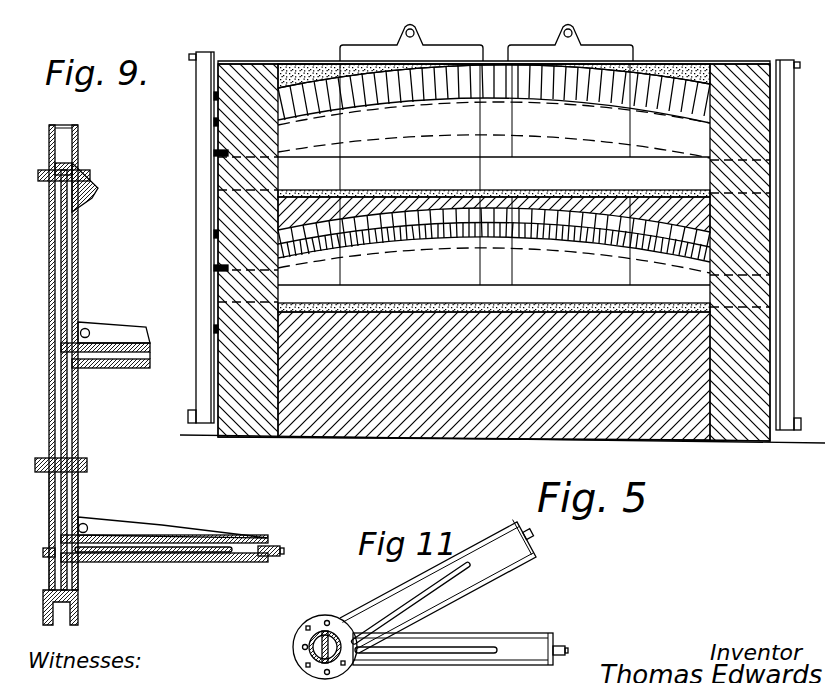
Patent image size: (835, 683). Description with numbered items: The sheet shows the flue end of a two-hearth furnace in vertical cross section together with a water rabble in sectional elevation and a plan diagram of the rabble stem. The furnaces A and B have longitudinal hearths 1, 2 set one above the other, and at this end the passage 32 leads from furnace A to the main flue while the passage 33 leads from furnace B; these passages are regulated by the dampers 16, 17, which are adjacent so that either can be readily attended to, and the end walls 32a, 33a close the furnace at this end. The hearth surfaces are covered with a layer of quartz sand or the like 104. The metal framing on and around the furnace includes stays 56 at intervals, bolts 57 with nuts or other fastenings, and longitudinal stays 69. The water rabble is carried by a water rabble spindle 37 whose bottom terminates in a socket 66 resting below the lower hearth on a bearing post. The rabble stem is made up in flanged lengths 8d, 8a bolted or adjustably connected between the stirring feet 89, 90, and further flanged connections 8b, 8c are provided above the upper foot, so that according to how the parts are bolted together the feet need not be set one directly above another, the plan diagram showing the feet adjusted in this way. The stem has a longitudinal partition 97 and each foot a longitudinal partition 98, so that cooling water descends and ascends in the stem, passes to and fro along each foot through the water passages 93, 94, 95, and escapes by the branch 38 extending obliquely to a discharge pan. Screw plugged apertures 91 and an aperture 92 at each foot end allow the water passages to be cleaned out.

In FIG. 5, the stays 56 is at (211, 42).
In FIG. 5, the bolts 57 is at (270, 56).
In FIG. 5, the damper 16 is at (472, 43).
In FIG. 5, the damper 17 is at (630, 45).
In FIG. 5, the longitudinal stays 69 is at (214, 92).
In FIG. 5, the layer of quartz sand 104 is at (395, 192).
In FIG. 5, the passage 33 is at (494, 107).
In FIG. 5, the end wall 33a is at (494, 143).
In FIG. 5, the hearth 2 is at (442, 192).
In FIG. 5, the furnace B is at (532, 173).
In FIG. 5, the passage 32 is at (494, 241).
In FIG. 5, the end wall 32a is at (494, 277).
In FIG. 5, the hearth 1 is at (443, 303).
In FIG. 5, the furnace A is at (533, 271).
In FIG. 9, the flanged length of rabble stem 8d is at (80, 267).
In FIG. 11, the flanged length of rabble stem 8d is at (305, 637).
In FIG. 9, the water rabble spindle 37 is at (80, 122).
In FIG. 9, the water passage 94 is at (65, 142).
In FIG. 9, the longitudinal partition 97 is at (62, 397).
In FIG. 9, the flanged connection 8c is at (40, 183).
In FIG. 9, the branch 38 is at (90, 182).
In FIG. 9, the water passage 95 is at (68, 307).
In FIG. 9, the stirring foot 89 is at (117, 372).
In FIG. 11, the stirring foot 89 is at (478, 588).
In FIG. 9, the longitudinal partition 98 is at (152, 352).
In FIG. 9, the flanged connection 8b is at (90, 463).
In FIG. 11, the flanged connection 8b is at (325, 618).
In FIG. 9, the flanged length of rabble stem 8a is at (48, 480).
In FIG. 9, the stirring foot 90 is at (165, 563).
In FIG. 11, the stirring foot 90 is at (525, 628).
In FIG. 9, the water passage 93 is at (65, 557).
In FIG. 9, the foot end aperture 92 is at (282, 538).
In FIG. 11, the foot end aperture 92 is at (570, 642).
In FIG. 9, the screw plugged aperture 91 is at (48, 550).
In FIG. 9, the socket 66 is at (65, 618).